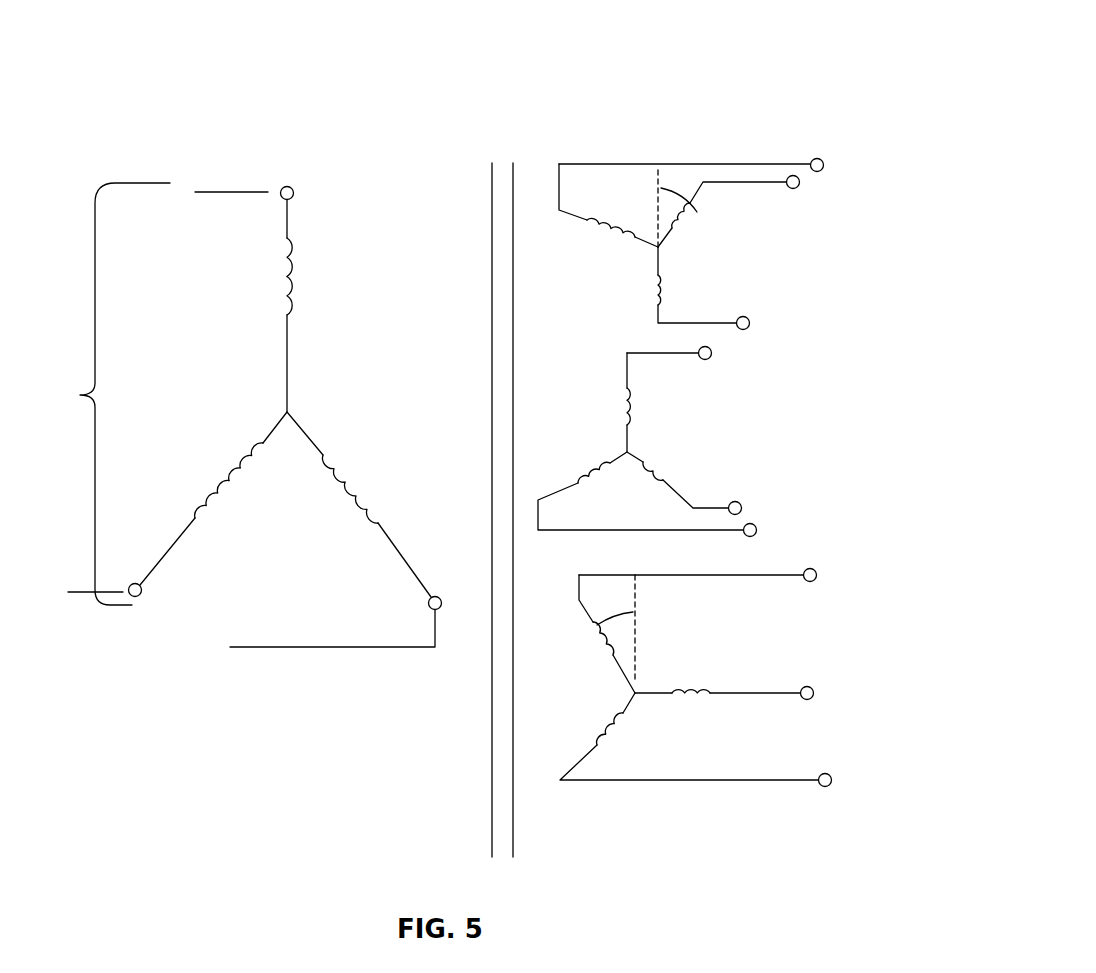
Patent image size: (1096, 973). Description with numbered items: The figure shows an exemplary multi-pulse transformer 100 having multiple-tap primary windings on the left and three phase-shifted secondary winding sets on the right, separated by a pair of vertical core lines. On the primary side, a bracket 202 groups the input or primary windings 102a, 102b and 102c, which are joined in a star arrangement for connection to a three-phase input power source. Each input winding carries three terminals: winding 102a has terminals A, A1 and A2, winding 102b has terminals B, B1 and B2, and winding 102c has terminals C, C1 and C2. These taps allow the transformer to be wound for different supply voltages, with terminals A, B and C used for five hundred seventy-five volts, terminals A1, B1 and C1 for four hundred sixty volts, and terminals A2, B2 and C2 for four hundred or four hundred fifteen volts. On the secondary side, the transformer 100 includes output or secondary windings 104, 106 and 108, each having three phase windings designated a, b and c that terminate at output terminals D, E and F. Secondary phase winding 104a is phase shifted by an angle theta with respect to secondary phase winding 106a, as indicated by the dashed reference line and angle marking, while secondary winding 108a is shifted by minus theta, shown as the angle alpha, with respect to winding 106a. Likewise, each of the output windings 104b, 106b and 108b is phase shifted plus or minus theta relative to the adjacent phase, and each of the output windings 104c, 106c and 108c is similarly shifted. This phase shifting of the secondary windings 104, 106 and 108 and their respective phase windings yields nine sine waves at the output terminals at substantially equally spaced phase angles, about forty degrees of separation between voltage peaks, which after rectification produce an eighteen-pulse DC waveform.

The multi-pulse transformer 100 is at (640, 121).
The secondary winding 104 is at (738, 244).
The secondary phase winding 104a is at (689, 206).
The output winding 104b is at (613, 241).
The output winding 104c is at (675, 286).
The secondary winding 106 is at (649, 433).
The secondary phase winding 106a is at (640, 400).
The output winding 106b is at (601, 455).
The output winding 106c is at (660, 466).
The secondary winding 108 is at (686, 678).
The secondary winding 108a is at (620, 638).
The output winding 108b is at (571, 717).
The output winding 108c is at (697, 702).
The rotor winding 202 is at (246, 414).
The input winding 102a is at (284, 297).
The input winding 102b is at (370, 508).
The input winding 102c is at (208, 501).
The terminal A1 is at (308, 258).
The terminal A2 is at (308, 293).
The terminal B1 is at (382, 500).
The terminal B2 is at (359, 466).
The terminal C1 is at (193, 500).
The terminal C2 is at (228, 461).